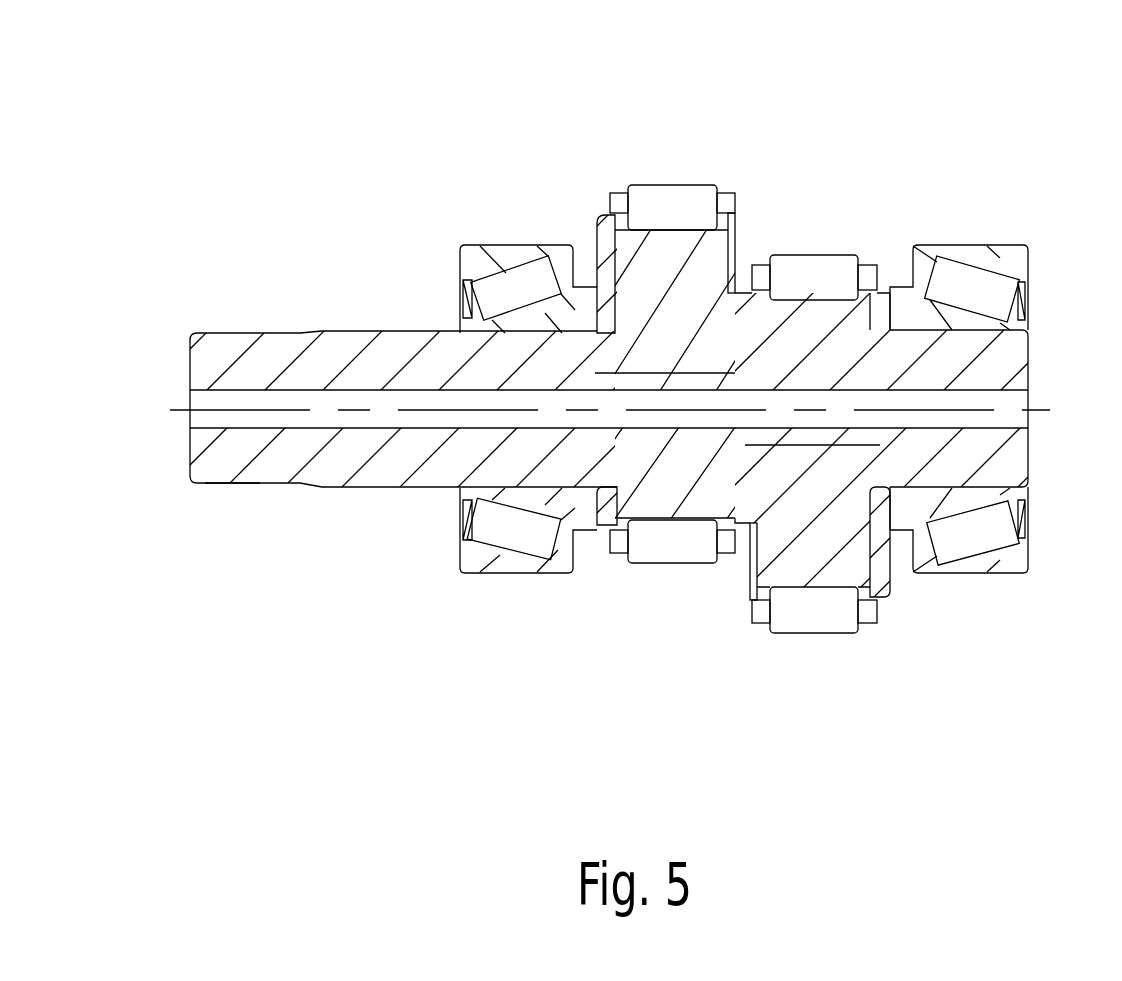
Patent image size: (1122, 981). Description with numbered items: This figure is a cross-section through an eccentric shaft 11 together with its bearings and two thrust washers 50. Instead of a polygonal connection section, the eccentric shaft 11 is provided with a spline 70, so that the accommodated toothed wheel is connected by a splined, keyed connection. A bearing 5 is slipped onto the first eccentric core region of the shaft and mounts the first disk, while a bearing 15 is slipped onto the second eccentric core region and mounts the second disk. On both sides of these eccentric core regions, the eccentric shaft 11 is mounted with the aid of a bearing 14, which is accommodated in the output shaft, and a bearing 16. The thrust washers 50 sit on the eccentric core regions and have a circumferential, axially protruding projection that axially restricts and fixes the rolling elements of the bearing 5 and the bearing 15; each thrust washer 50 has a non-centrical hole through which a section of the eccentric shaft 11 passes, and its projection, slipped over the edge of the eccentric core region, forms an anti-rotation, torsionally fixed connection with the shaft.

The eccentric shaft 11 is at (378, 362).
The bearing 5 is at (675, 202).
The thrust washer 50 is at (608, 258).
The spline 70 is at (224, 497).
The bearing 16 is at (510, 528).
The bearing 15 is at (815, 612).
The bearing 14 is at (965, 535).